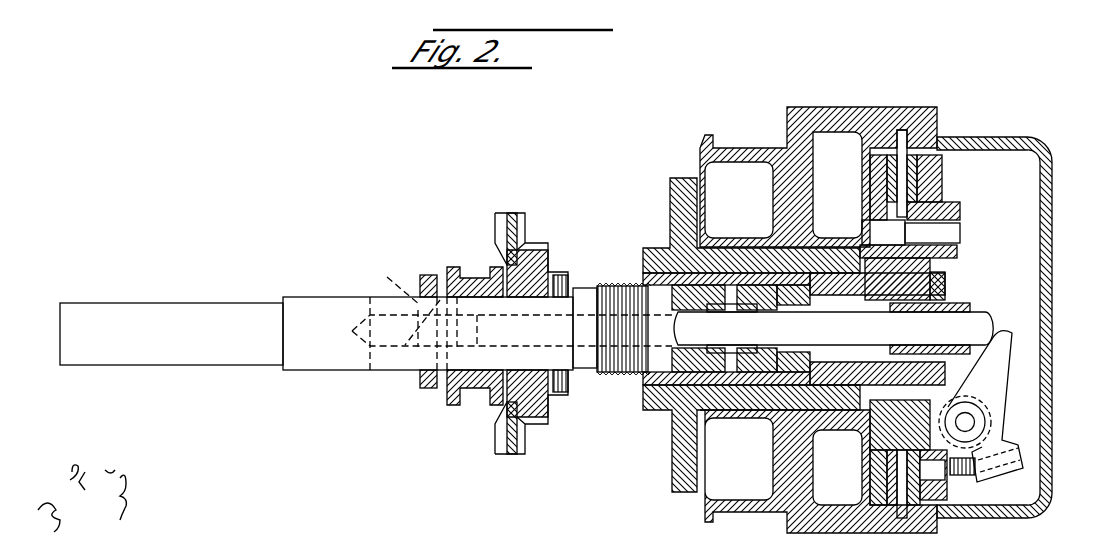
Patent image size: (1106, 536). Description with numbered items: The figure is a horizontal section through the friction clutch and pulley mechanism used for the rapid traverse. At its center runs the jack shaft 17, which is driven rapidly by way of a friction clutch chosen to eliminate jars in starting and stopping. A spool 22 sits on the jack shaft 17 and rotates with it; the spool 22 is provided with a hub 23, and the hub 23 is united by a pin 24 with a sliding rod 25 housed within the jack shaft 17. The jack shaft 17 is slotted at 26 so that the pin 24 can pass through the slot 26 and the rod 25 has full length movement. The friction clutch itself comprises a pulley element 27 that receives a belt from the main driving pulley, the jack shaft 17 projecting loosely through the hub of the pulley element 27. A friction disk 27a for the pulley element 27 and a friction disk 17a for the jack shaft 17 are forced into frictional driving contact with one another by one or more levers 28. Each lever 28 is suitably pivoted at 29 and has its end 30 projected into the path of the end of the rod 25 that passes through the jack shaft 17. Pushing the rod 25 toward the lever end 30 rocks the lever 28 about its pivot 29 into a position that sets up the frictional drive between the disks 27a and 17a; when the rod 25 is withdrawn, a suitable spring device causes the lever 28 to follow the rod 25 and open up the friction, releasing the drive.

The jack shaft 17 is at (325, 360).
The friction disk for the jack shaft 17a is at (905, 200).
The spool 22 is at (470, 280).
The hub 23 is at (455, 375).
The pin 24 is at (434, 275).
The sliding rod 25 is at (407, 333).
The slot 26 is at (398, 303).
The pulley element 27 is at (738, 162).
The friction disk for the pulley element 27a is at (870, 180).
The lever 28 is at (995, 392).
The pivot 29 is at (972, 422).
The lever end 30 is at (1000, 333).